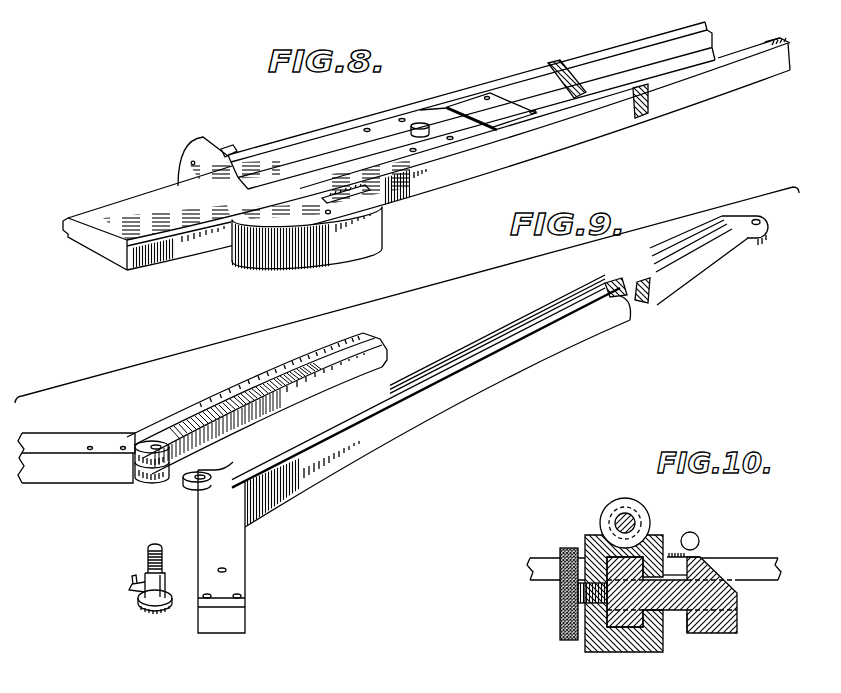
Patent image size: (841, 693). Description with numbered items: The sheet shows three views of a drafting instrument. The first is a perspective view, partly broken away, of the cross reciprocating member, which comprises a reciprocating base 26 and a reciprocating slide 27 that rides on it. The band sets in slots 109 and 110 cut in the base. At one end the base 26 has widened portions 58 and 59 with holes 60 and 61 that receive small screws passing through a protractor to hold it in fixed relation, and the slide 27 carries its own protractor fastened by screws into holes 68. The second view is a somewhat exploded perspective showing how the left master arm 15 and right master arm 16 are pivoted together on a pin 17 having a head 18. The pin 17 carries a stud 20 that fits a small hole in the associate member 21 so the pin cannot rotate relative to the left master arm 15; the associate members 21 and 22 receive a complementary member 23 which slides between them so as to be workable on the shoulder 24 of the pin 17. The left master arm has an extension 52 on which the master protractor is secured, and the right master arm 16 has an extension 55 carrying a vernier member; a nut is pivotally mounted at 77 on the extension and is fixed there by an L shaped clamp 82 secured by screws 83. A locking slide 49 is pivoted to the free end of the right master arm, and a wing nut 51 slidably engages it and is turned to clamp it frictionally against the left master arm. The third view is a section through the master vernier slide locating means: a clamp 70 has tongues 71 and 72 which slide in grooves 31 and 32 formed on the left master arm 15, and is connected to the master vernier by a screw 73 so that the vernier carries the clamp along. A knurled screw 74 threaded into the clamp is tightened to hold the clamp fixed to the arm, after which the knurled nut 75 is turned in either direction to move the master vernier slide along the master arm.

In FIG. 8, the reciprocating base 26 is at (333, 128).
In FIG. 8, the reciprocating slide 27 is at (113, 242).
In FIG. 8, the widened portion 58 is at (192, 147).
In FIG. 8, the hole 60 is at (190, 162).
In FIG. 8, the slot 109 is at (227, 157).
In FIG. 8, the slot 110 is at (331, 186).
In FIG. 8, the hole 68 is at (487, 97).
In FIG. 8, the widened portion 59 is at (384, 215).
In FIG. 8, the hole 61 is at (331, 214).
In FIG. 9, the extension 52 is at (45, 432).
In FIG. 9, the associate member 22 is at (135, 461).
In FIG. 9, the associate member 21 is at (146, 482).
In FIG. 9, the complementary member 23 is at (184, 487).
In FIG. 9, the left master arm 15 is at (212, 396).
In FIG. 10, the left master arm 15 is at (738, 617).
In FIG. 9, the right master arm 16 is at (350, 450).
In FIG. 9, the extension 55 is at (245, 551).
In FIG. 9, the pivot 77 is at (227, 570).
In FIG. 9, the screw 83 is at (242, 596).
In FIG. 9, the L shaped clamp 82 is at (220, 634).
In FIG. 9, the pin 17 is at (150, 546).
In FIG. 9, the shoulder 24 is at (164, 578).
In FIG. 9, the stud 20 is at (130, 583).
In FIG. 9, the head 18 is at (150, 612).
In FIG. 10, the locking slide 49 is at (545, 557).
In FIG. 10, the knurled screw 74 is at (560, 608).
In FIG. 10, the tongue 71 is at (668, 613).
In FIG. 10, the clamp 70 is at (637, 653).
In FIG. 10, the knurled nut 75 is at (616, 502).
In FIG. 10, the screw 73 is at (632, 517).
In FIG. 10, the tongue 72 is at (676, 555).
In FIG. 10, the wing nut 51 is at (700, 538).
In FIG. 10, the groove 31 is at (704, 559).
In FIG. 10, the groove 32 is at (686, 628).